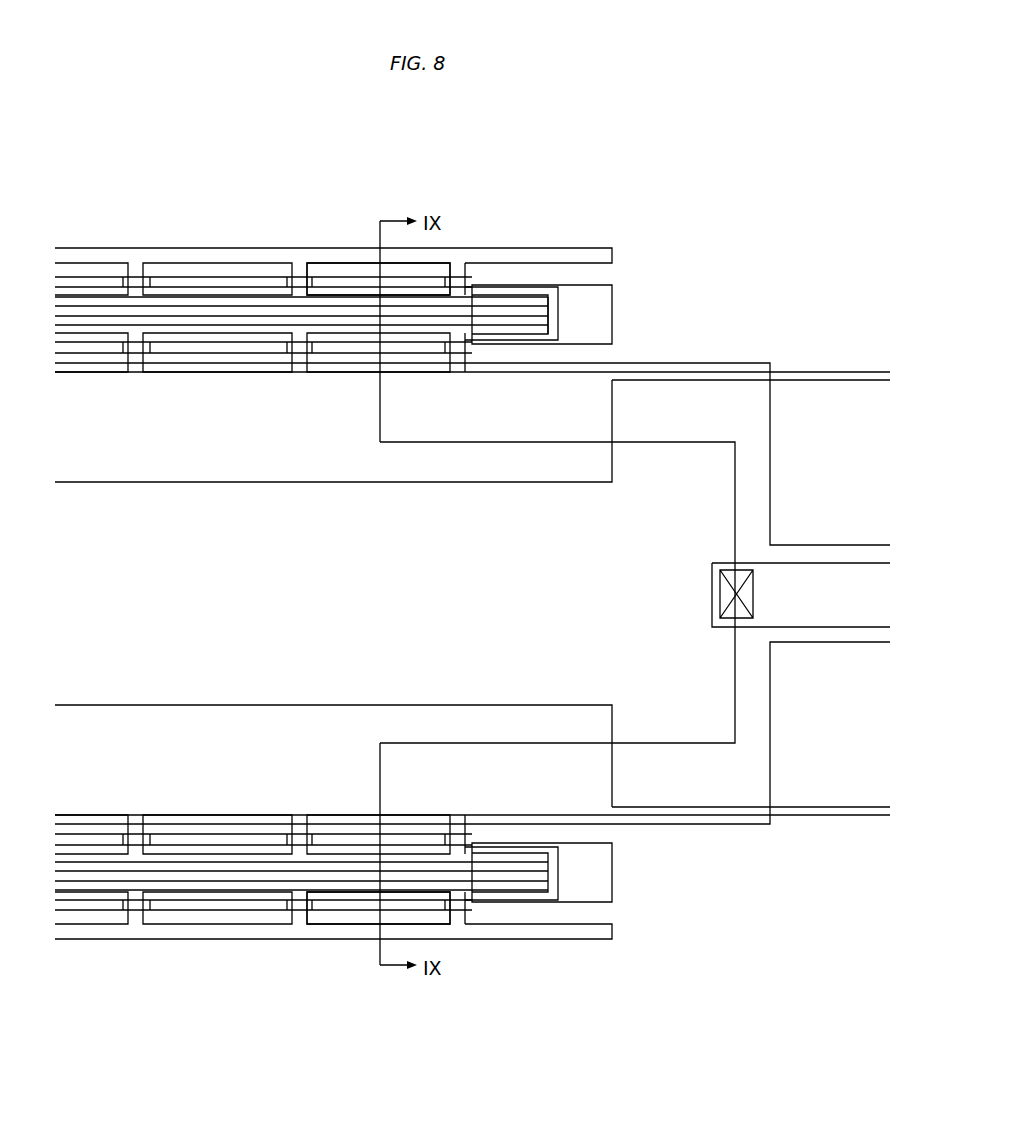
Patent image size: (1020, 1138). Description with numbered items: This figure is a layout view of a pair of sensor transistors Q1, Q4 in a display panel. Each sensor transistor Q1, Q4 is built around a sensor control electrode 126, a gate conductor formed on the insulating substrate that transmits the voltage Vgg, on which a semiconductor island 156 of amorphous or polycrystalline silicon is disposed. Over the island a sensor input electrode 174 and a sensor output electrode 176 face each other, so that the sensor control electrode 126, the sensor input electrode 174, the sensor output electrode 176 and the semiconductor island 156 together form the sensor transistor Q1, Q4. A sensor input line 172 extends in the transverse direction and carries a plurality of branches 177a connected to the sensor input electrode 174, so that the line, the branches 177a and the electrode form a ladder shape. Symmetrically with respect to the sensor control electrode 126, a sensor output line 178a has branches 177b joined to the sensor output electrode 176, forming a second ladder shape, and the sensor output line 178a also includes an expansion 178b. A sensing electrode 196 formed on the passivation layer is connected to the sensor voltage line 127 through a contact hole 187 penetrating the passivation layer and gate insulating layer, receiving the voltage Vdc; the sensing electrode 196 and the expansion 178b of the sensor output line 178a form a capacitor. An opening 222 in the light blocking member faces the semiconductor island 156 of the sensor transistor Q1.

The sensor input line 172 is at (538, 248).
The branch 177a is at (470, 268).
The branch 177b is at (470, 360).
The sensor output electrode 176 is at (530, 340).
The sensor input electrode 174 is at (530, 293).
The semiconductor island 156 is at (558, 302).
The sensor control electrode 126 is at (612, 311).
The opening 222 is at (556, 312).
The sensor output line 178a is at (663, 380).
The expansion 178b is at (612, 465).
The sensing electrode 196 is at (770, 475).
The sensor voltage line 127 is at (858, 562).
The contact hole 187 is at (720, 590).
The sensor transistor Q1 is at (339, 263).
The sensor transistor Q4 is at (340, 912).